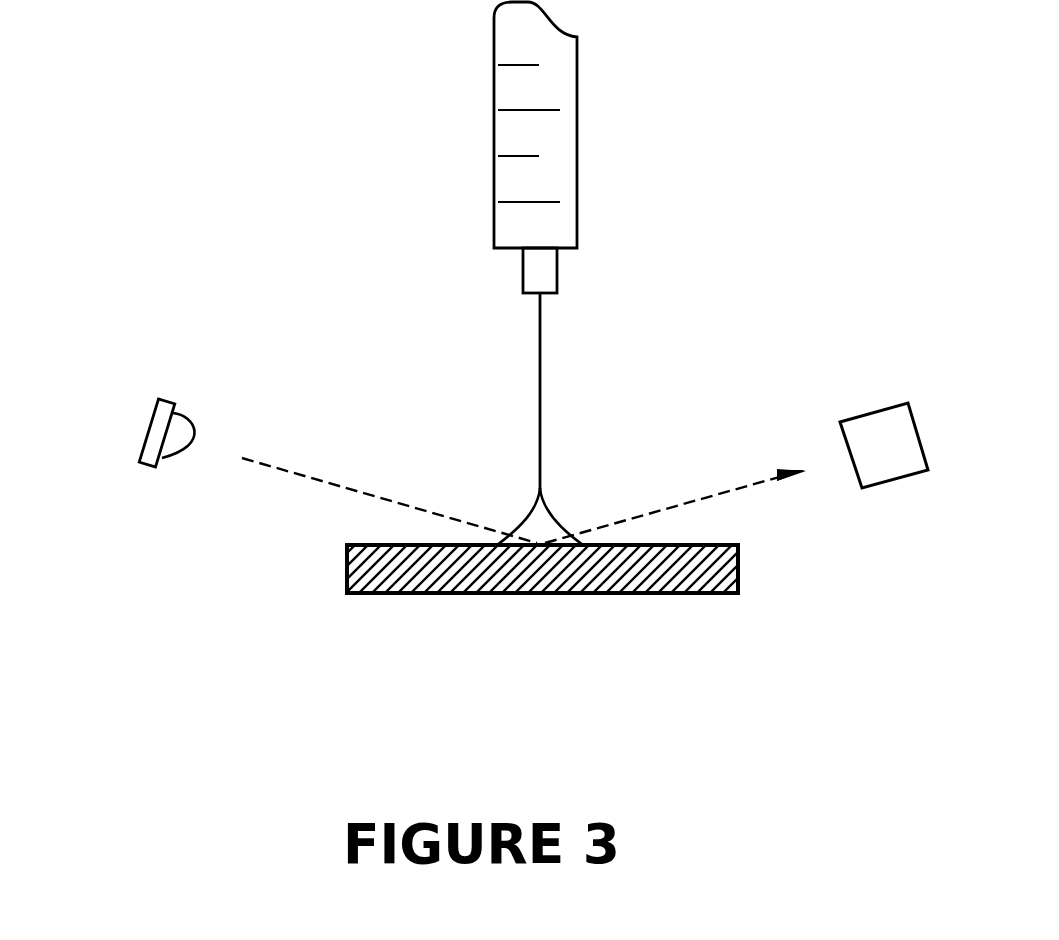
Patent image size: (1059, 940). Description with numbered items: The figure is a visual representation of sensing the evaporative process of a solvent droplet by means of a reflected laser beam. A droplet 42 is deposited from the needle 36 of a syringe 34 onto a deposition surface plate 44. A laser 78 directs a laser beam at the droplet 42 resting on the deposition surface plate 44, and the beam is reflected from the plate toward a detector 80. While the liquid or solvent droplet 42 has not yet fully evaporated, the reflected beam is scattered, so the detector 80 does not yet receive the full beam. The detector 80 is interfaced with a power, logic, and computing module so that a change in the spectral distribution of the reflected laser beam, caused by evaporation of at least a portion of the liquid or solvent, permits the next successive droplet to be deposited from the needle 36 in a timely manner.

The syringe 34 is at (493, 131).
The needle 36 is at (534, 395).
The droplet 42 is at (534, 496).
The deposition surface plate 44 is at (447, 543).
The laser 78 is at (164, 396).
The detector 80 is at (838, 419).